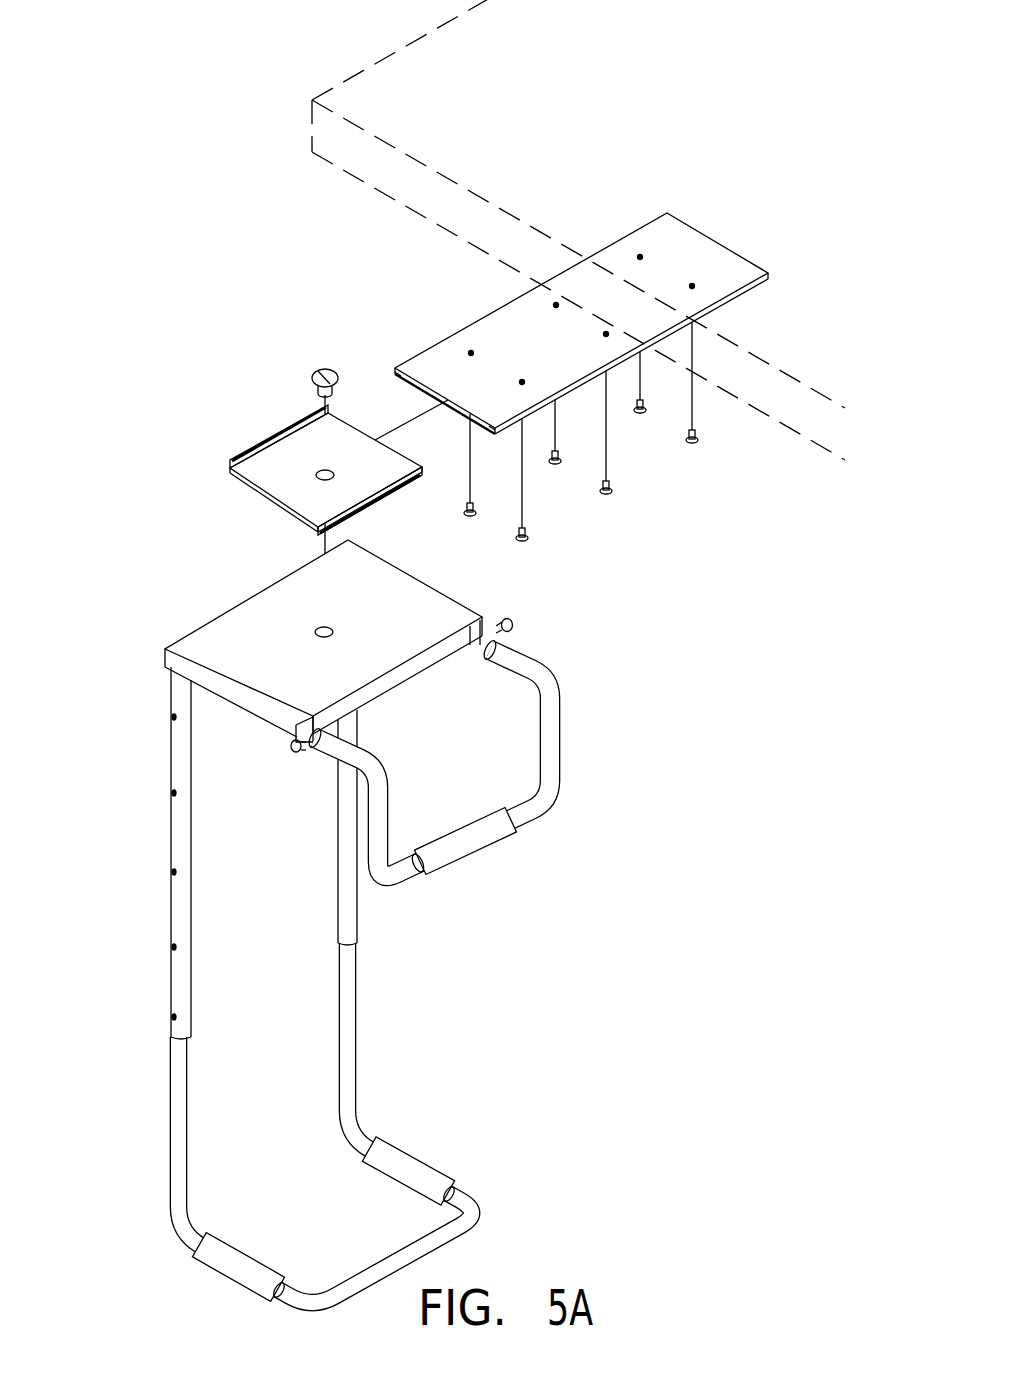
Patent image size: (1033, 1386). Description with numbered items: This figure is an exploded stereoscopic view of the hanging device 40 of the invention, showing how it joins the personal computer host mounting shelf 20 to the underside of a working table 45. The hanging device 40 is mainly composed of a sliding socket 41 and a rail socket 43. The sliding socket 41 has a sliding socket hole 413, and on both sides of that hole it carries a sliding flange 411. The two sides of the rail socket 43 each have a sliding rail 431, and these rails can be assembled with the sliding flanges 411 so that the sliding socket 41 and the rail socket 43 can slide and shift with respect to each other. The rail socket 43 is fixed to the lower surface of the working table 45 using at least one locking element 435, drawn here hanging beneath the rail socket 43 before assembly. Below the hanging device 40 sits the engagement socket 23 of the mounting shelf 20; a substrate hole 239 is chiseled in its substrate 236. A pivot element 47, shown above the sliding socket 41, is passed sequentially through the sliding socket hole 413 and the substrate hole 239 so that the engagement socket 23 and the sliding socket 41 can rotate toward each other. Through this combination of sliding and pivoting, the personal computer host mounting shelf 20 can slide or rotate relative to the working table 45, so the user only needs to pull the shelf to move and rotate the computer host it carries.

The personal computer host mounting shelf 20 is at (102, 540).
The engagement socket 23 is at (233, 603).
The substrate 236 is at (203, 648).
The substrate hole 239 is at (322, 627).
The hanging device 40 is at (367, 210).
The sliding socket 41 is at (243, 482).
The sliding flange 411 is at (240, 453).
The sliding socket hole 413 is at (322, 470).
The rail socket 43 is at (480, 318).
The sliding rail 431 is at (392, 376).
The locking element 435 is at (525, 540).
The working table 45 is at (345, 80).
The knob 47 is at (318, 375).